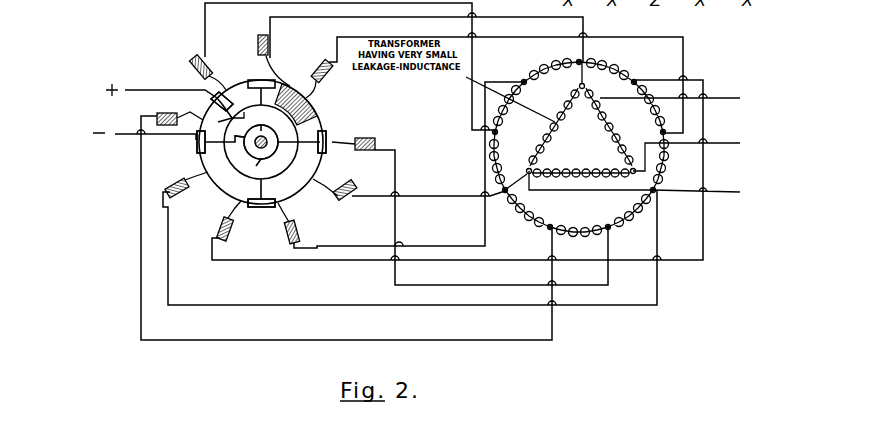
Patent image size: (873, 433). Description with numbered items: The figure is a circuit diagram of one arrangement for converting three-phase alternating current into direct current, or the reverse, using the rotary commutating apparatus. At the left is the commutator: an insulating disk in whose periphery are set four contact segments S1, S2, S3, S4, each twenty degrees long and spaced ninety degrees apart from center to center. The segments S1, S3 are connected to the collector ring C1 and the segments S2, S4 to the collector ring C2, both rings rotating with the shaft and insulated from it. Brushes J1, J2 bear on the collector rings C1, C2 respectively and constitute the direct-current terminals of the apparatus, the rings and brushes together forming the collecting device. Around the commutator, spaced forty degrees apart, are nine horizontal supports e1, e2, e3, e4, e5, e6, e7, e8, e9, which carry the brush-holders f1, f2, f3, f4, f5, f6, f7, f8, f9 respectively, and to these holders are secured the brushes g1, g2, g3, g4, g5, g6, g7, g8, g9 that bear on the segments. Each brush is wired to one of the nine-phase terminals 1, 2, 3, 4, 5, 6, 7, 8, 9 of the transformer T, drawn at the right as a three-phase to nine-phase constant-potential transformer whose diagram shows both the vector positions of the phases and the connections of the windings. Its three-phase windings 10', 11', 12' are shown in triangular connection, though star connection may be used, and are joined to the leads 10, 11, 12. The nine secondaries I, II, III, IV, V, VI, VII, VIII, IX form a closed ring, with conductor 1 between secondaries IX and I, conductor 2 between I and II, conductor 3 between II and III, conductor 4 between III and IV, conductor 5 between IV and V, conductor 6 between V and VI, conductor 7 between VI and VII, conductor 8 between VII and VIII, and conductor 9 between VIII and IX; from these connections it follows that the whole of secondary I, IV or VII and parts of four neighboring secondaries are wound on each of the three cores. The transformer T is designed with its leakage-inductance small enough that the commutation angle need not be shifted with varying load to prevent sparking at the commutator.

The 9-phase terminal 1 is at (578, 72).
The 9-phase terminal 2 is at (629, 90).
The 9-phase terminal 3 is at (658, 128).
The 9-phase terminal 4 is at (648, 186).
The 9-phase terminal 5 is at (610, 220).
The 9-phase terminal 6 is at (554, 221).
The 9-phase terminal 7 is at (511, 184).
The 9-phase terminal 8 is at (501, 132).
The 9-phase terminal 9 is at (529, 90).
The secondary winding I is at (622, 52).
The secondary winding II is at (676, 94).
The secondary winding III is at (692, 170).
The secondary winding IV is at (646, 238).
The secondary winding V is at (586, 255).
The secondary winding VI is at (526, 216).
The secondary winding VII is at (494, 160).
The secondary winding VIII is at (500, 101).
The secondary winding IX is at (552, 52).
The lead 10 is at (690, 98).
The lead 11 is at (721, 143).
The lead 12 is at (716, 192).
The transformer T is at (584, 126).
The 3-phase winding 10' is at (554, 127).
The 3-phase winding 11' is at (609, 127).
The 3-phase winding 12' is at (581, 167).
The collector ring C1 is at (296, 112).
The collector ring C2 is at (256, 160).
The contact segment S1 is at (225, 101).
The contact segment S2 is at (318, 150).
The contact segment S3 is at (258, 198).
The contact segment S4 is at (206, 135).
The brush J1 is at (241, 108).
The brush J2 is at (249, 125).
The horizontal support e1 is at (270, 32).
The horizontal support e2 is at (211, 234).
The horizontal support e3 is at (506, 83).
The horizontal support e4 is at (163, 188).
The horizontal support e5 is at (375, 140).
The horizontal support e6 is at (146, 128).
The horizontal support e7 is at (352, 200).
The horizontal support e8 is at (196, 66).
The horizontal support e9 is at (292, 248).
The brush-holder f1 is at (270, 47).
The brush-holder f2 is at (234, 238).
The brush-holder f3 is at (328, 76).
The brush-holder f4 is at (172, 180).
The brush-holder f5 is at (362, 152).
The brush-holder f6 is at (168, 112).
The brush-holder f7 is at (340, 198).
The brush-holder f8 is at (208, 62).
The brush-holder f9 is at (286, 228).
The brush g1 is at (280, 73).
The brush g2 is at (230, 207).
The brush g3 is at (320, 96).
The brush g4 is at (194, 172).
The brush g5 is at (340, 147).
The brush g6 is at (193, 113).
The brush g7 is at (323, 188).
The brush g8 is at (224, 80).
The brush g9 is at (268, 210).